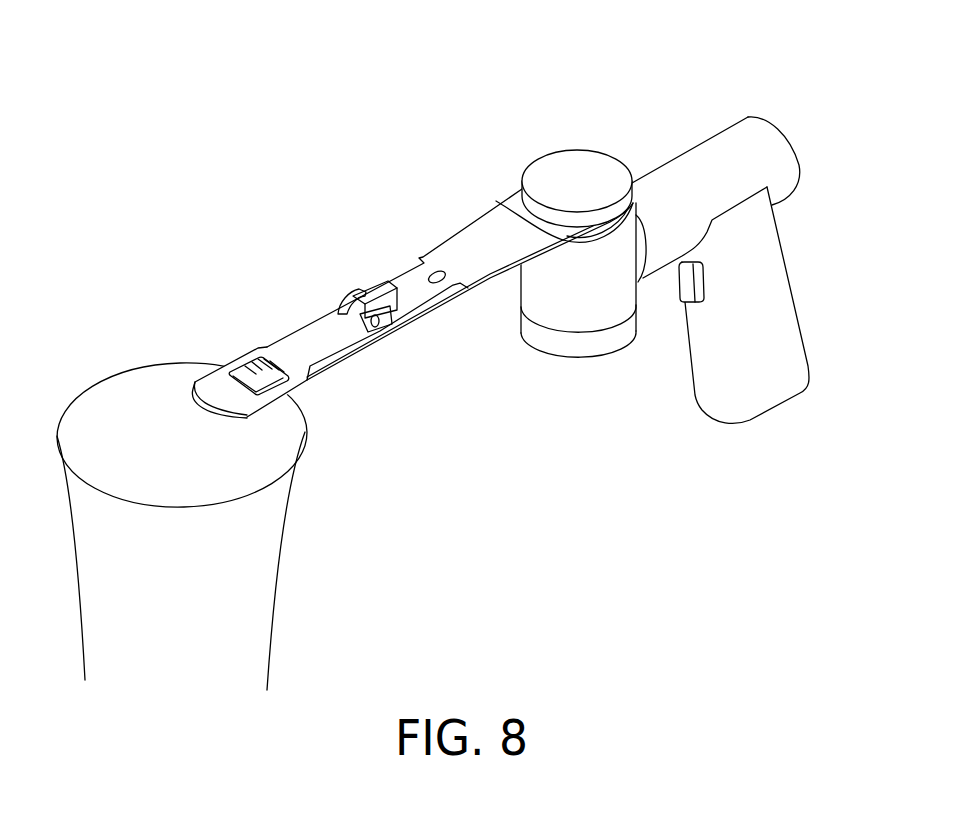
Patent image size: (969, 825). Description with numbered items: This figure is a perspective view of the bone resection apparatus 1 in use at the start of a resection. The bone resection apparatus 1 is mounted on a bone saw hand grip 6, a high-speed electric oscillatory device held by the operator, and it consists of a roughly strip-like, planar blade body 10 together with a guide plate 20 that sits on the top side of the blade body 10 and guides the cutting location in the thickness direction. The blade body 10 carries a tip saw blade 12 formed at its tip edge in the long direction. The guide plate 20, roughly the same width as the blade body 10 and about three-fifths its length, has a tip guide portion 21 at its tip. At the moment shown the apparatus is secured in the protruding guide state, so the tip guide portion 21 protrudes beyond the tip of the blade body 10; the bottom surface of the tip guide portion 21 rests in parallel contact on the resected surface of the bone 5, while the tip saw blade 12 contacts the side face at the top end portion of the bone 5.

The bone resection apparatus 1 is at (404, 195).
The bone 5 is at (279, 596).
The bone saw hand grip 6 is at (796, 309).
The blade body 10 is at (440, 247).
The tip saw blade 12 is at (298, 389).
The guide plate 20 is at (278, 340).
The tip guide portion 21 is at (197, 394).